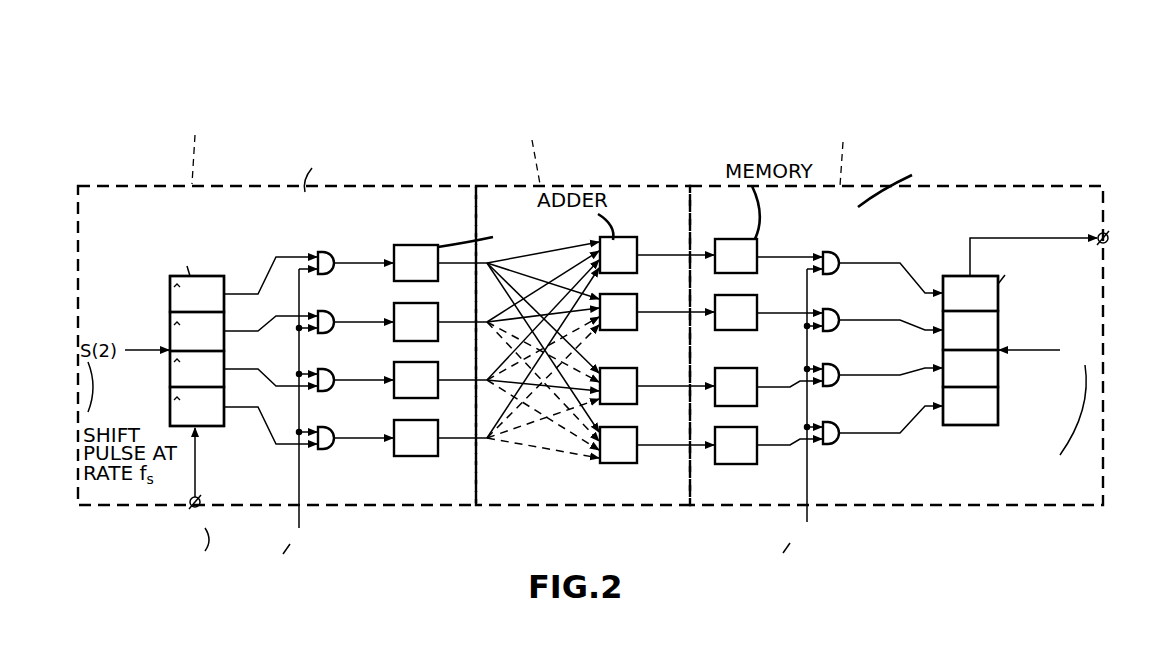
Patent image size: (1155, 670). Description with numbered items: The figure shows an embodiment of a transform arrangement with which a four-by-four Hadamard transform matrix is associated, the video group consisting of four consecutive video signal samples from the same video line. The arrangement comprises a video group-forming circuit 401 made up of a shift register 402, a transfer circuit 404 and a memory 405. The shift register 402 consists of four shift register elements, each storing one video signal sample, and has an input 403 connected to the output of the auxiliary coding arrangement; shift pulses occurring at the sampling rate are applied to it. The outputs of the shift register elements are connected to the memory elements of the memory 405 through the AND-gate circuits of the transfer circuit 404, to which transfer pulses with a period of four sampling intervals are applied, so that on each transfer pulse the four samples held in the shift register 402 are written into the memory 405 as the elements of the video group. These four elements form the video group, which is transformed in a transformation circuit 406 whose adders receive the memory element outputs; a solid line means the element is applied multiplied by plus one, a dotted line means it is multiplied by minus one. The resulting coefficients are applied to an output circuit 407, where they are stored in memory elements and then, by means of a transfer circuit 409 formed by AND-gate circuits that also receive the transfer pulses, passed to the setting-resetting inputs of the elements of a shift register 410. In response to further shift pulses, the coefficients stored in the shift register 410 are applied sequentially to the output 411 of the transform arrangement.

The video group-forming circuit 401 is at (250, 184).
The shift register 402 is at (213, 224).
The input 403 is at (194, 509).
The transfer circuit 404 is at (333, 214).
The memory 405 is at (426, 214).
The transformation circuit 406 is at (565, 186).
The output circuit 407 is at (855, 186).
The transfer circuit 409 is at (858, 213).
The shift register 410 is at (980, 213).
The output 411 is at (1107, 235).